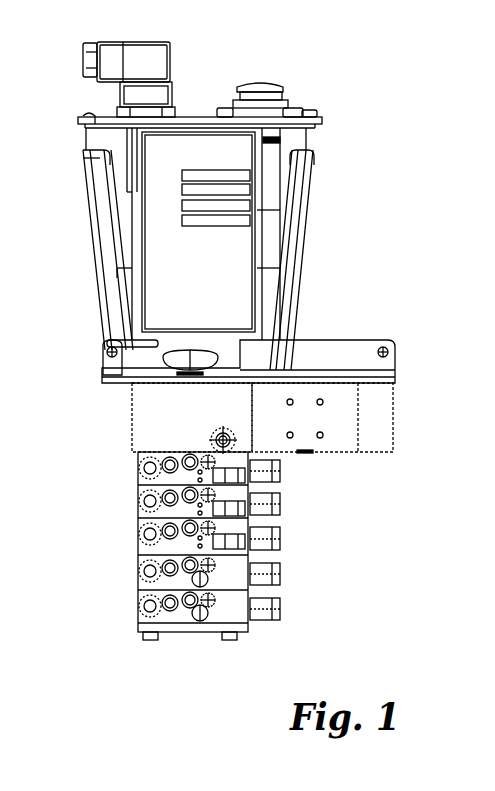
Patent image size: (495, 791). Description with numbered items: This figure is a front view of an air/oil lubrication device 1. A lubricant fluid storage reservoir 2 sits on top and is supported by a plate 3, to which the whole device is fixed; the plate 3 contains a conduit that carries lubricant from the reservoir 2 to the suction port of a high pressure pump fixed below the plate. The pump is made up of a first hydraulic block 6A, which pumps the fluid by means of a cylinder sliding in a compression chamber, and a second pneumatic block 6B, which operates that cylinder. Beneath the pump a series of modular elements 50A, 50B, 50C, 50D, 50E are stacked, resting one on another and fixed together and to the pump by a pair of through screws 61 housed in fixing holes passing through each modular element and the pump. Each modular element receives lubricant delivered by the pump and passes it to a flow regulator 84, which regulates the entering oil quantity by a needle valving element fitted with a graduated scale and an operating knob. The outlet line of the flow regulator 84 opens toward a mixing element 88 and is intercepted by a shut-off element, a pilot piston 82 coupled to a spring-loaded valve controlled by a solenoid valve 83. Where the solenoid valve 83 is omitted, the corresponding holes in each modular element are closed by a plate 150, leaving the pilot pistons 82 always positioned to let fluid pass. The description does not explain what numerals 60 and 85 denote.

The air/oil lubrication device 1 is at (379, 78).
The lubricant fluid storage reservoir 2 is at (310, 190).
The plate 3 is at (352, 352).
The first hydraulic block 6A is at (132, 395).
The second pneumatic block 6B is at (335, 416).
The modular element 50A is at (129, 461).
The modular element 50B is at (129, 493).
The modular element 50C is at (129, 529).
The modular element 50D is at (129, 563).
The modular element 50E is at (129, 598).
The manifold block 60 is at (177, 632).
The through screws 61 is at (152, 641).
The pilot piston 82 is at (200, 455).
The solenoid valve 83 is at (250, 523).
The flow regulator 84 is at (148, 456).
The outlet fitting 85 is at (250, 490).
The mixing element 88 is at (278, 512).
The plate 150 is at (210, 623).